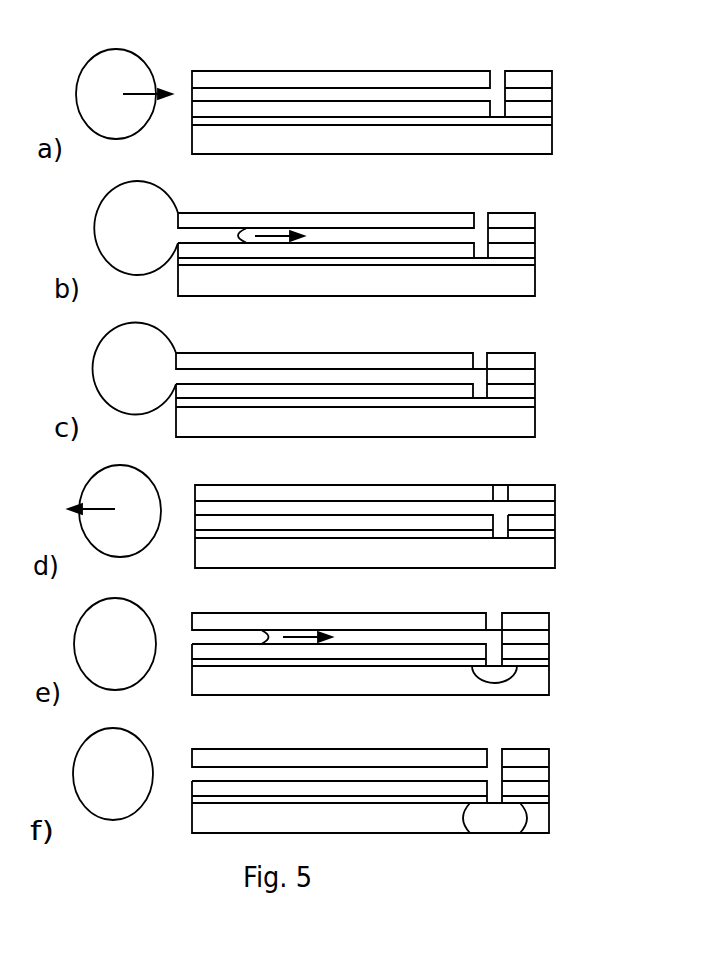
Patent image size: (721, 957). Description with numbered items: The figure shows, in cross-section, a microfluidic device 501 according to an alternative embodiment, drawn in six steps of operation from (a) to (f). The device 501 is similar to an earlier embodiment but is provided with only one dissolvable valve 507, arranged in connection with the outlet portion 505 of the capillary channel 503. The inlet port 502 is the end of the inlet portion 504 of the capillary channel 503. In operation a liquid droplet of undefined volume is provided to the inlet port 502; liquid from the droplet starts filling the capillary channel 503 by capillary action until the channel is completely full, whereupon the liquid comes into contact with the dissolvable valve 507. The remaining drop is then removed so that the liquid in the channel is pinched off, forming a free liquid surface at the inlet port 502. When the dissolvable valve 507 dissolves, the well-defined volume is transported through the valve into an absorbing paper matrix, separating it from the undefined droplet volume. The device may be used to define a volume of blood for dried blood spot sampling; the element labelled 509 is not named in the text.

The microfluidic device 501 is at (386, 81).
The inlet port 502 is at (192, 93).
The capillary channel 503 is at (325, 97).
The inlet portion 504 is at (209, 95).
The outlet portion 505 is at (476, 96).
The dissolvable valve 507 is at (495, 118).
The substrate 509 is at (493, 145).